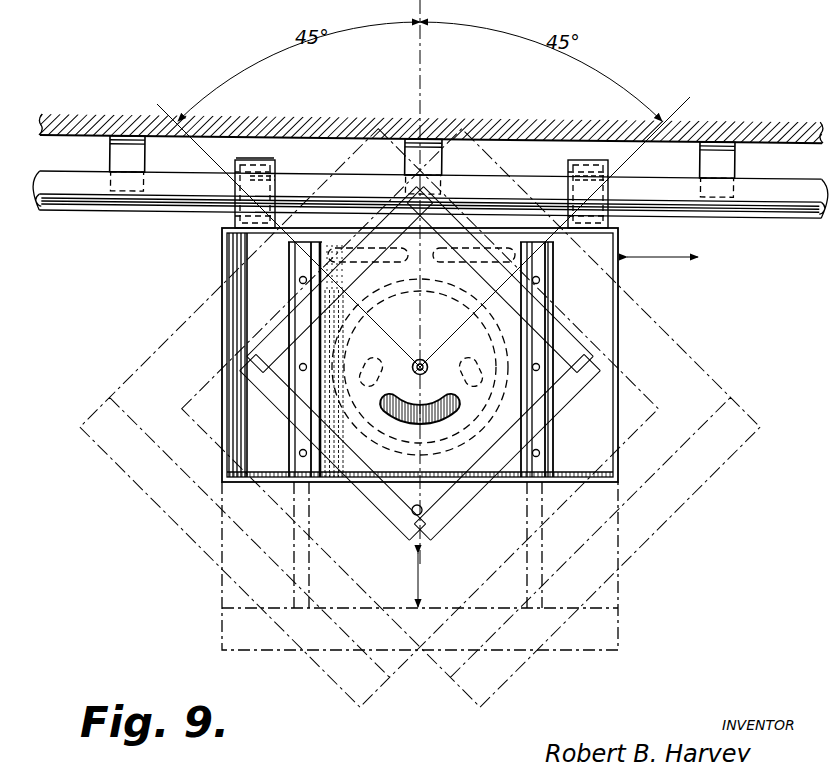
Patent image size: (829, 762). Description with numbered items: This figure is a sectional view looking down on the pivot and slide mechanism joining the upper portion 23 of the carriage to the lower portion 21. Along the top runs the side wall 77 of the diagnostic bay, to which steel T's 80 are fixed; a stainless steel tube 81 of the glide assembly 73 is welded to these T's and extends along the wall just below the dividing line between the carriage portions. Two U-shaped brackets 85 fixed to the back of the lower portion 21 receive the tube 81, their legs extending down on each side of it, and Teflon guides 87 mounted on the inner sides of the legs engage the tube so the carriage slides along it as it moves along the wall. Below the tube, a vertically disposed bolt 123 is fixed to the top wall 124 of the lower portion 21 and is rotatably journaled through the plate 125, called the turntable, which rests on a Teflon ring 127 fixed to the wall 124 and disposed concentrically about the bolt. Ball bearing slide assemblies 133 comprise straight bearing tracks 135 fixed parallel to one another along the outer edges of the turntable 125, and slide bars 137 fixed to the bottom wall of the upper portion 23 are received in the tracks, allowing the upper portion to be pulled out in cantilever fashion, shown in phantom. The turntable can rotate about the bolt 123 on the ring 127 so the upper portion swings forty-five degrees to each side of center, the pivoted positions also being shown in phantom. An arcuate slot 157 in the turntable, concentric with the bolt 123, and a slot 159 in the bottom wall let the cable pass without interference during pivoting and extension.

The lower portion of the carriage 21 is at (222, 268).
The upper portion of the carriage 23 is at (154, 522).
The glide assembly 73 is at (266, 150).
The side wall 77 is at (495, 135).
The steel T's 80 is at (112, 156).
The stainless steel tube 81 is at (78, 203).
The U-shaped brackets 85 is at (584, 167).
The Teflon guides 87 is at (278, 170).
The bolt 123 is at (420, 360).
The top wall 124 is at (240, 415).
The plate (turntable) 125 is at (388, 466).
The Teflon ring 127 is at (502, 358).
The ball bearing slide assemblies 133 is at (284, 367).
The straight bearing tracks 135 is at (288, 284).
The slide bars 137 is at (300, 317).
The arcuate slot 157 is at (396, 386).
The slot 159 is at (432, 505).